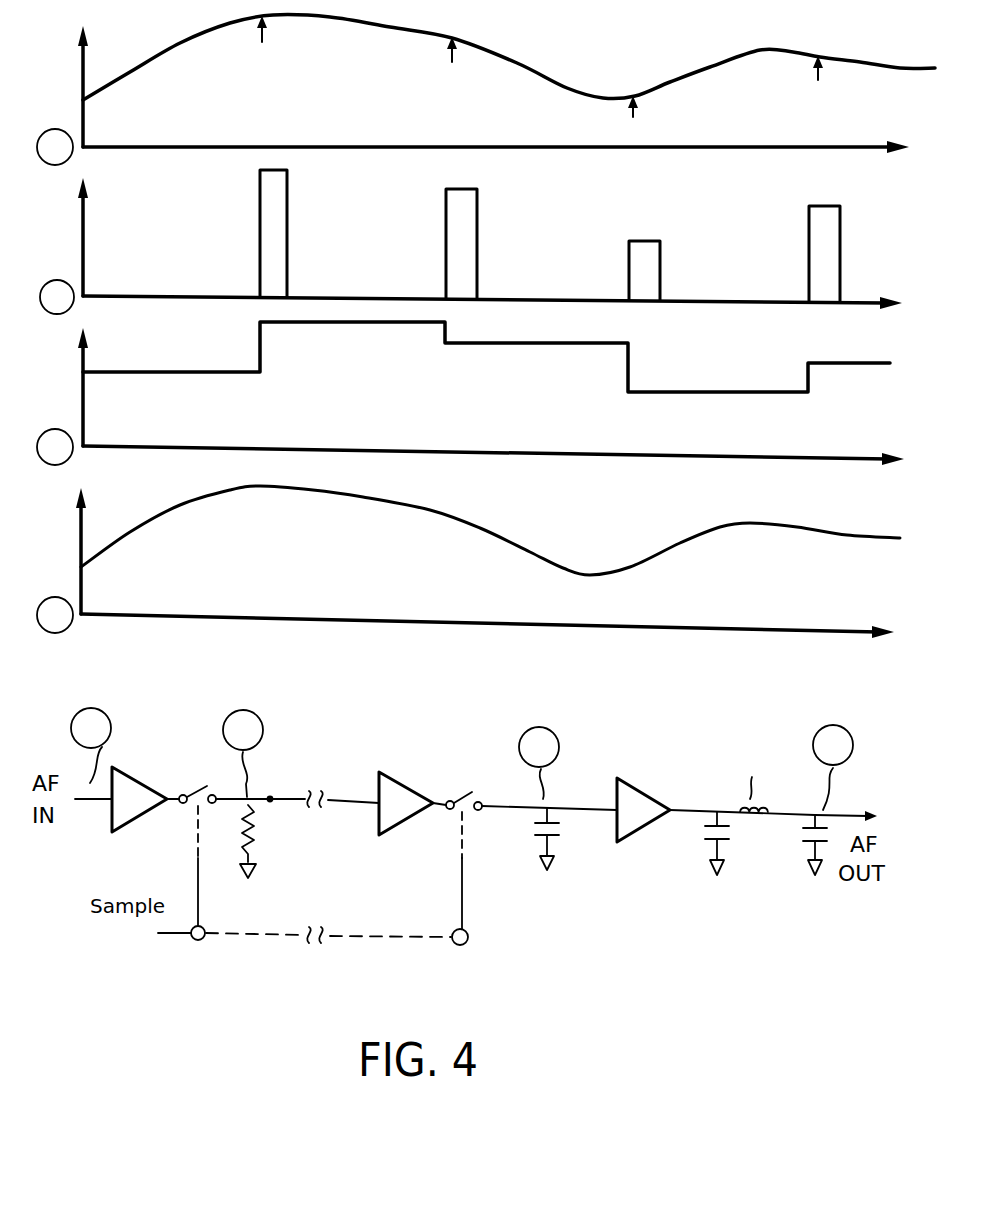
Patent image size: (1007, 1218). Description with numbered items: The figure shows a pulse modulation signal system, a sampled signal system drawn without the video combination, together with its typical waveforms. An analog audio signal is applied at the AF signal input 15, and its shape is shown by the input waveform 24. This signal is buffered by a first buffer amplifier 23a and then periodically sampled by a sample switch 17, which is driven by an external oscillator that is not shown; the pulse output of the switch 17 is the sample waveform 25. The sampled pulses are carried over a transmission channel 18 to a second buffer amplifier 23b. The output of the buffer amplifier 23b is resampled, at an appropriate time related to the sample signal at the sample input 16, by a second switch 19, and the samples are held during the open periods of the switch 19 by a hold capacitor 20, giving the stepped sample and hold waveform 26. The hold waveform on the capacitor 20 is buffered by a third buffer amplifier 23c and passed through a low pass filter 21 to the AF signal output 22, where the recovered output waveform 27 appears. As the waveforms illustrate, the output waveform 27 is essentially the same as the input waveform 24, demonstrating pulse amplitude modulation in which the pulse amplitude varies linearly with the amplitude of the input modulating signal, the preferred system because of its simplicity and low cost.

The signal input 15 is at (100, 779).
The sample input 16 is at (295, 876).
The switch 17 is at (201, 790).
The transmission channel 18 is at (322, 792).
The switch 19 is at (474, 792).
The hold capacitor 20 is at (570, 826).
The low pass filter 21 is at (731, 802).
The signal output 22 is at (866, 806).
The buffer amplifier 23a is at (138, 816).
The buffer amplifier 23b is at (403, 826).
The buffer amplifier 23c is at (637, 829).
The input waveform 24 is at (486, 96).
The sample waveform 25 is at (471, 242).
The sample and hold waveform 26 is at (470, 393).
The output waveform 27 is at (468, 562).